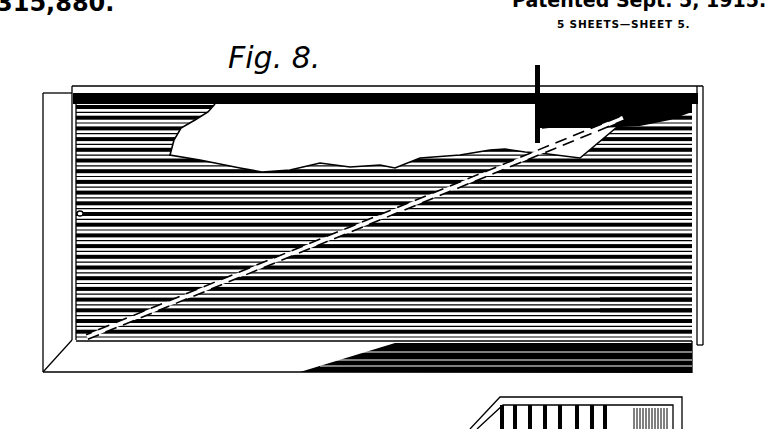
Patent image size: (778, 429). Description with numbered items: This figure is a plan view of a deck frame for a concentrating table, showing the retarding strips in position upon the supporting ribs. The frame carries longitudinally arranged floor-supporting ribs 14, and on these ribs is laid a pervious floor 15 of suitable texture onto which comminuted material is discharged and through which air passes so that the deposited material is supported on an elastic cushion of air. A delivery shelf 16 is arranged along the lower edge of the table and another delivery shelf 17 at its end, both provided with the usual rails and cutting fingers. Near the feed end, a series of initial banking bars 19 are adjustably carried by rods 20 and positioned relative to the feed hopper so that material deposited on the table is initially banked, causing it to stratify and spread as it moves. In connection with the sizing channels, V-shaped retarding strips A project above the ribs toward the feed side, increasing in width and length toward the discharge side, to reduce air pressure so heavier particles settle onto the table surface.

The floor-supporting ribs 14 is at (80, 213).
The pervious floor 15 is at (396, 138).
The delivery shelf 16 is at (158, 365).
The delivery shelf 17 is at (47, 273).
The initial banking bars 19 is at (534, 116).
The rods 20 is at (540, 78).
The retarding strips A is at (693, 292).